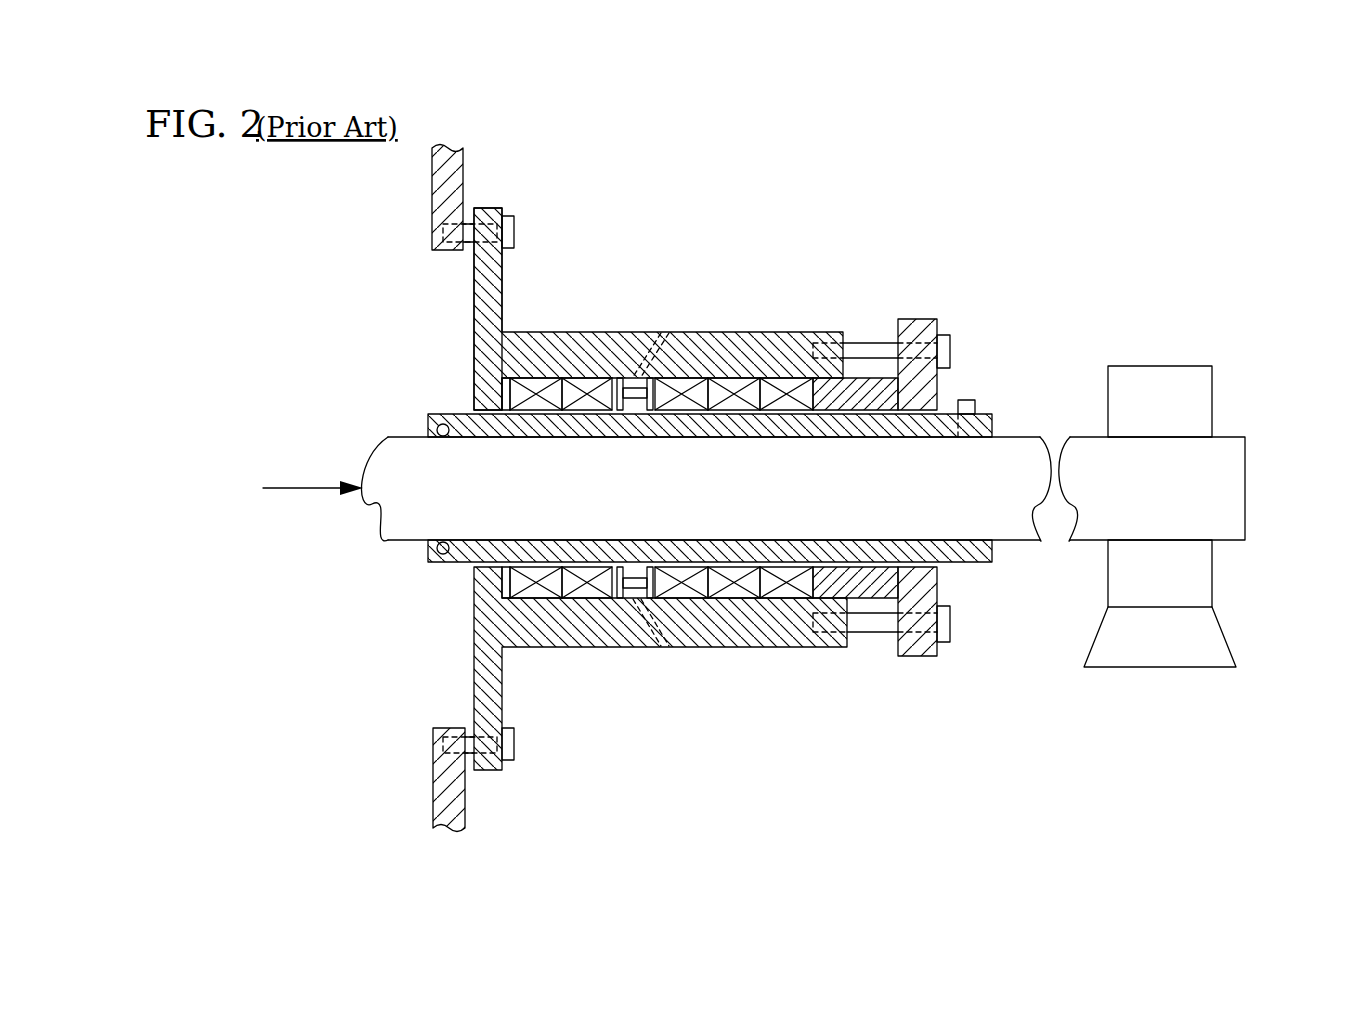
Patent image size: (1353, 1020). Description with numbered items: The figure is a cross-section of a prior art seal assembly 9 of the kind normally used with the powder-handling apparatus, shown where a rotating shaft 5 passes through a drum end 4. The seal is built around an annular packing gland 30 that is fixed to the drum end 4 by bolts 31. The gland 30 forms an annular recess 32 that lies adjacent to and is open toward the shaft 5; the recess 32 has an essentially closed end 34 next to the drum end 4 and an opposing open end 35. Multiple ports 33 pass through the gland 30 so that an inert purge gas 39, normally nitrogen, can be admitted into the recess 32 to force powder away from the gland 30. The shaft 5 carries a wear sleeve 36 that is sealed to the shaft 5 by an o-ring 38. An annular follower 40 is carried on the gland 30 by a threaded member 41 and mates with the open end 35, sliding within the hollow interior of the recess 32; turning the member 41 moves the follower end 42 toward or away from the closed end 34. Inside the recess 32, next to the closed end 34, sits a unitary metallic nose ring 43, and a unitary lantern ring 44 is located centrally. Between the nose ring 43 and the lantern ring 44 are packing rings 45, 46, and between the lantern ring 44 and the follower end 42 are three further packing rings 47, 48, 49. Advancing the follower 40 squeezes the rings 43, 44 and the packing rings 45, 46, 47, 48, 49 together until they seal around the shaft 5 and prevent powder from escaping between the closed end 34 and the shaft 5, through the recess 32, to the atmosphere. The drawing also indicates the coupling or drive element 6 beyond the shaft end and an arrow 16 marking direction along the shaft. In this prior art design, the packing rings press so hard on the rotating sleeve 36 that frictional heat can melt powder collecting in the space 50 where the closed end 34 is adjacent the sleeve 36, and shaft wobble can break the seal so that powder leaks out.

The drum end 4 is at (465, 168).
The shaft 5 is at (1097, 523).
The drive flange 6 is at (1150, 366).
The seal assembly 9 is at (790, 152).
The flow direction arrow 16 is at (300, 489).
The packing gland 30 is at (530, 332).
The bolts 31 is at (514, 236).
The recess 32 is at (822, 597).
The ports 33 is at (656, 352).
The closed end 34 is at (472, 390).
The open end 35 is at (850, 598).
The wear sleeve 36 is at (967, 552).
The o-ring 38 is at (447, 434).
The purge gas 39 is at (668, 312).
The follower 40 is at (940, 381).
The threaded member 41 is at (867, 342).
The follower end 42 is at (823, 388).
The nose ring 43 is at (508, 578).
The lantern ring 44 is at (636, 583).
The packing ring 45 is at (534, 596).
The packing ring 46 is at (589, 596).
The packing ring 47 is at (684, 596).
The packing ring 48 is at (733, 575).
The packing ring 49 is at (787, 575).
The space 50 is at (450, 403).